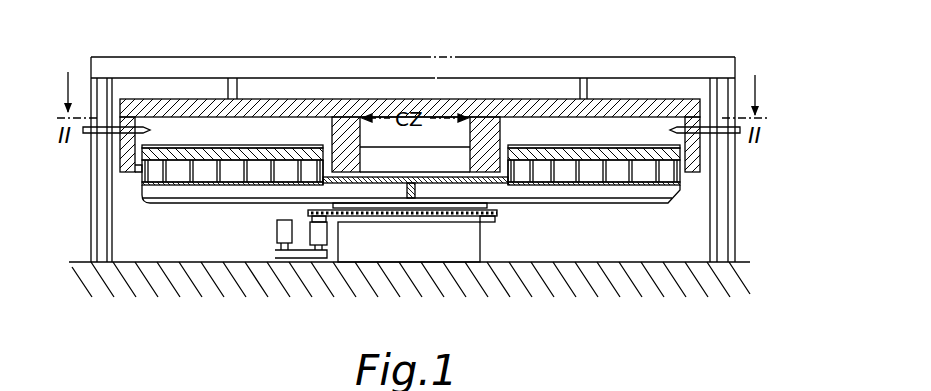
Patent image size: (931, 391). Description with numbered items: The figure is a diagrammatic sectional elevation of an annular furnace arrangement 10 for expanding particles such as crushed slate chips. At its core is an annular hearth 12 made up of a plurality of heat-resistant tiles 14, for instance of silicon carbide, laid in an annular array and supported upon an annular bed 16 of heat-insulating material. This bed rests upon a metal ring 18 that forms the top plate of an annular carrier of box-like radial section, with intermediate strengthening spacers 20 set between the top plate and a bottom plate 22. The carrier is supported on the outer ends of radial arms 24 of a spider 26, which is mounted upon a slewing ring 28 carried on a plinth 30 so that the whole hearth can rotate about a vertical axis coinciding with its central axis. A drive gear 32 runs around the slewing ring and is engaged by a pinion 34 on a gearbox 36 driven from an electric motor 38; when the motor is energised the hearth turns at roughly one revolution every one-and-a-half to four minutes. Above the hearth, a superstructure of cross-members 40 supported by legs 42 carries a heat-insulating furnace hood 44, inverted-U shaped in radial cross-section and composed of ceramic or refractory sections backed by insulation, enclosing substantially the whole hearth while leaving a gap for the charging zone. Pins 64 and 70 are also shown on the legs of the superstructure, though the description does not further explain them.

The annular furnace arrangement 10 is at (707, 55).
The annular hearth 12 is at (637, 143).
The heat-resistant tiles 14 is at (227, 147).
The annular bed 16 is at (292, 150).
The ring 18 is at (177, 172).
The strengthening spacers 20 is at (210, 173).
The bottom plate 22 is at (567, 182).
The radial arms 24 is at (617, 206).
The spider 26 is at (257, 210).
The slewing ring 28 is at (375, 207).
The plinth 30 is at (481, 250).
The drive gear 32 is at (447, 216).
The pinion 34 is at (323, 216).
The gearbox 36 is at (325, 236).
The electric motor 38 is at (278, 238).
The cross-members 40 is at (327, 62).
The legs 42 is at (91, 210).
The heat-insulating furnace hood 44 is at (178, 99).
The pin 64 is at (100, 135).
The pin 70 is at (726, 135).